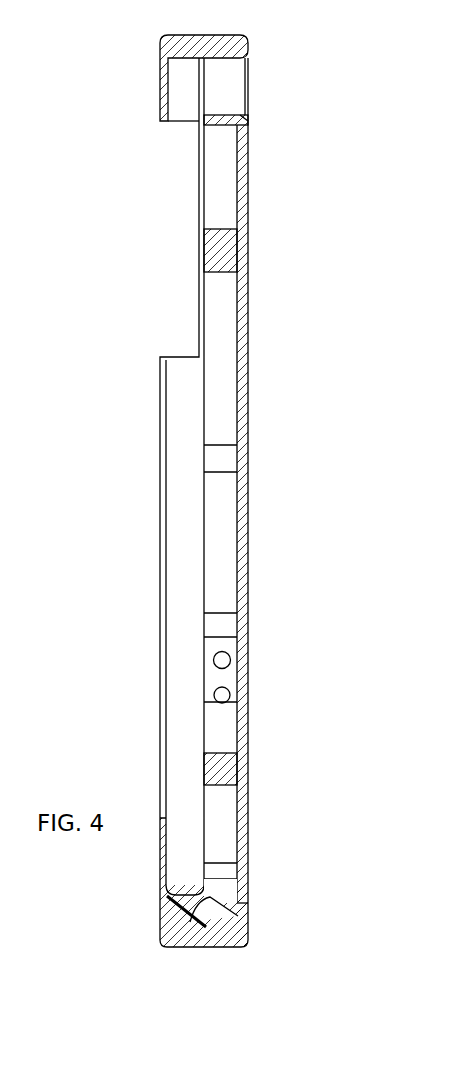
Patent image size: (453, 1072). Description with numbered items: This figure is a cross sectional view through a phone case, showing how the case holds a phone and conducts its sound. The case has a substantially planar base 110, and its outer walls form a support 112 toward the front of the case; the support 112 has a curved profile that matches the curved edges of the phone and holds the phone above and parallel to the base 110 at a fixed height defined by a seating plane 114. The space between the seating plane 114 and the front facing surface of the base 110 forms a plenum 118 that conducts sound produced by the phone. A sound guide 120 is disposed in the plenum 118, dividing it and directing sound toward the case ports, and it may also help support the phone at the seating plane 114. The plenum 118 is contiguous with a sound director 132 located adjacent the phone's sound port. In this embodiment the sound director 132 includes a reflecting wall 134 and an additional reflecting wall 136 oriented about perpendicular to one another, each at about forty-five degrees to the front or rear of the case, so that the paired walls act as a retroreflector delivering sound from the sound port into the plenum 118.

The base 110 is at (231, 409).
The support 112 is at (198, 45).
The seating plane 114 is at (205, 389).
The plenum 118 is at (220, 540).
The sound guide 120 is at (221, 253).
The sound director 132 is at (176, 927).
The reflecting wall 134 is at (212, 902).
The additional reflecting wall 136 is at (230, 905).